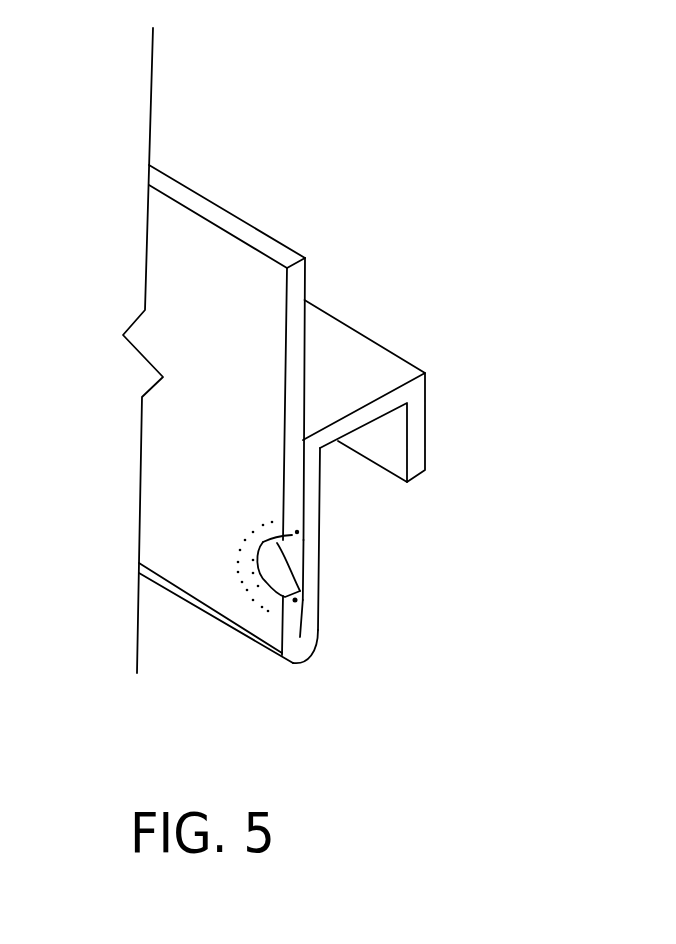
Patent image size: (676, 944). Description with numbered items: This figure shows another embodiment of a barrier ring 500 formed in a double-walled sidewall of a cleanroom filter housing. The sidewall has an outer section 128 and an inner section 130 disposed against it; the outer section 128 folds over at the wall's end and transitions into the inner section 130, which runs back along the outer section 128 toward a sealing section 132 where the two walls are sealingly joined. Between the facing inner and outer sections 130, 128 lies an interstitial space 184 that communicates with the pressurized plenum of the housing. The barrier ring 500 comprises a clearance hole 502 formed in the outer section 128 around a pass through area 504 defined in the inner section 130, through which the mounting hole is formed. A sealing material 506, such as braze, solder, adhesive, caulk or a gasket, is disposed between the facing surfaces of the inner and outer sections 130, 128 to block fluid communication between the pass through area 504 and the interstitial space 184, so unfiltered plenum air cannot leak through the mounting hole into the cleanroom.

The outer section 128 is at (290, 383).
The interstitial space 184 is at (307, 427).
The sealing section 132 is at (370, 403).
The inner section 130 is at (317, 487).
The barrier ring 500 is at (307, 622).
The clearance hole 502 is at (263, 582).
The pass through area 504 is at (305, 562).
The sealing material 506 is at (298, 532).